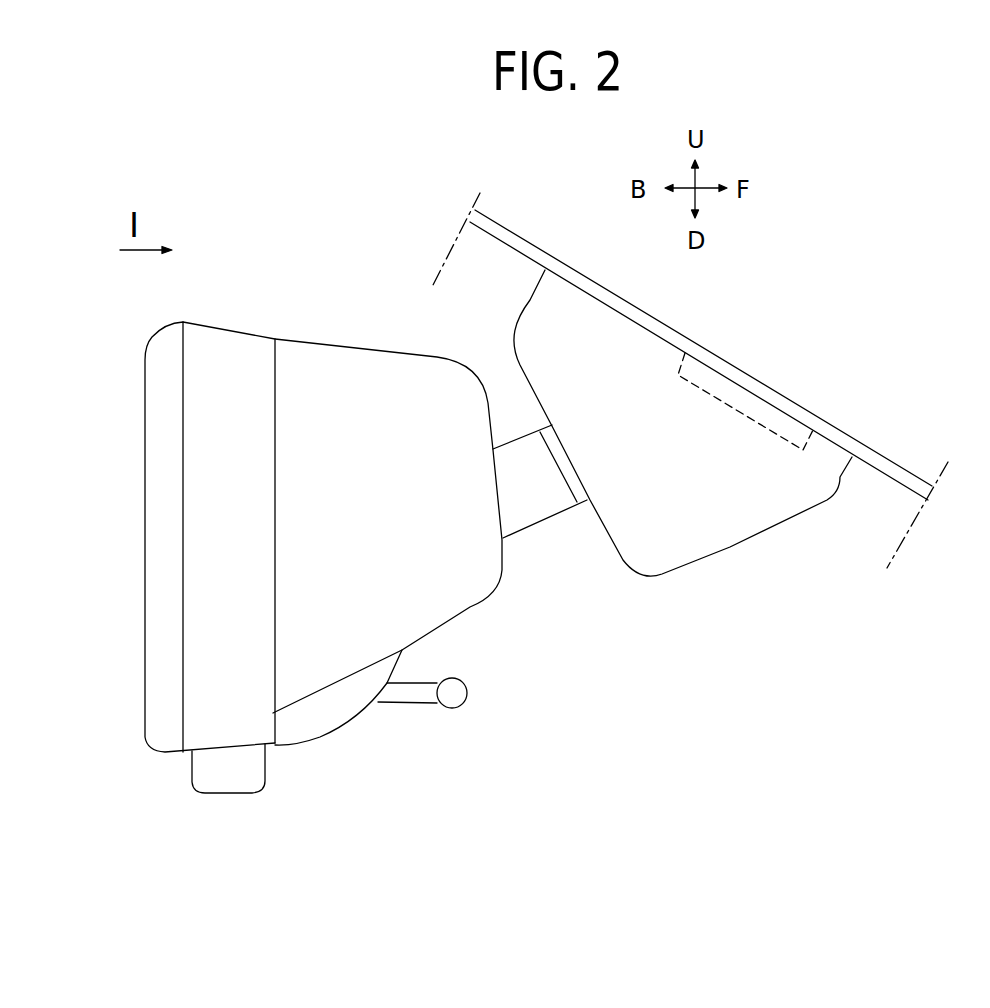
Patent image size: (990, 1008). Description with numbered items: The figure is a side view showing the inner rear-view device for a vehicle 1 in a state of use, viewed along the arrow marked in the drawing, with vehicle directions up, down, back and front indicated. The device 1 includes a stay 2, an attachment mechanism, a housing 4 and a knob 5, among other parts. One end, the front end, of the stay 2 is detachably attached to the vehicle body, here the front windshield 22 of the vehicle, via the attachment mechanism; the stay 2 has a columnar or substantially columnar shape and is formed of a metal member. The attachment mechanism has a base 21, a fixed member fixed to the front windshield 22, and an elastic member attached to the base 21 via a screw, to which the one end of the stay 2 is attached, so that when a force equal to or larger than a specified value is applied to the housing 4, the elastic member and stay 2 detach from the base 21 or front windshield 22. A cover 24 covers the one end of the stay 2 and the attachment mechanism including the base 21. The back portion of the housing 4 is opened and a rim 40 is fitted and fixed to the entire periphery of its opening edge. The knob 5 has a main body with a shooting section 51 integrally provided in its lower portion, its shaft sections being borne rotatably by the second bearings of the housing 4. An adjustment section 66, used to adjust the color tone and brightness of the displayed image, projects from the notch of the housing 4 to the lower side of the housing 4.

The inner rear-view device for a vehicle 1 is at (333, 230).
The stay 2 is at (550, 517).
The housing 4 is at (317, 338).
The knob 5 is at (415, 707).
The base 21 is at (743, 395).
The front windshield 22 is at (870, 447).
The cover 24 is at (727, 547).
The rim 40 is at (165, 325).
The shooting section 51 is at (463, 710).
The adjustment section 66 is at (228, 797).